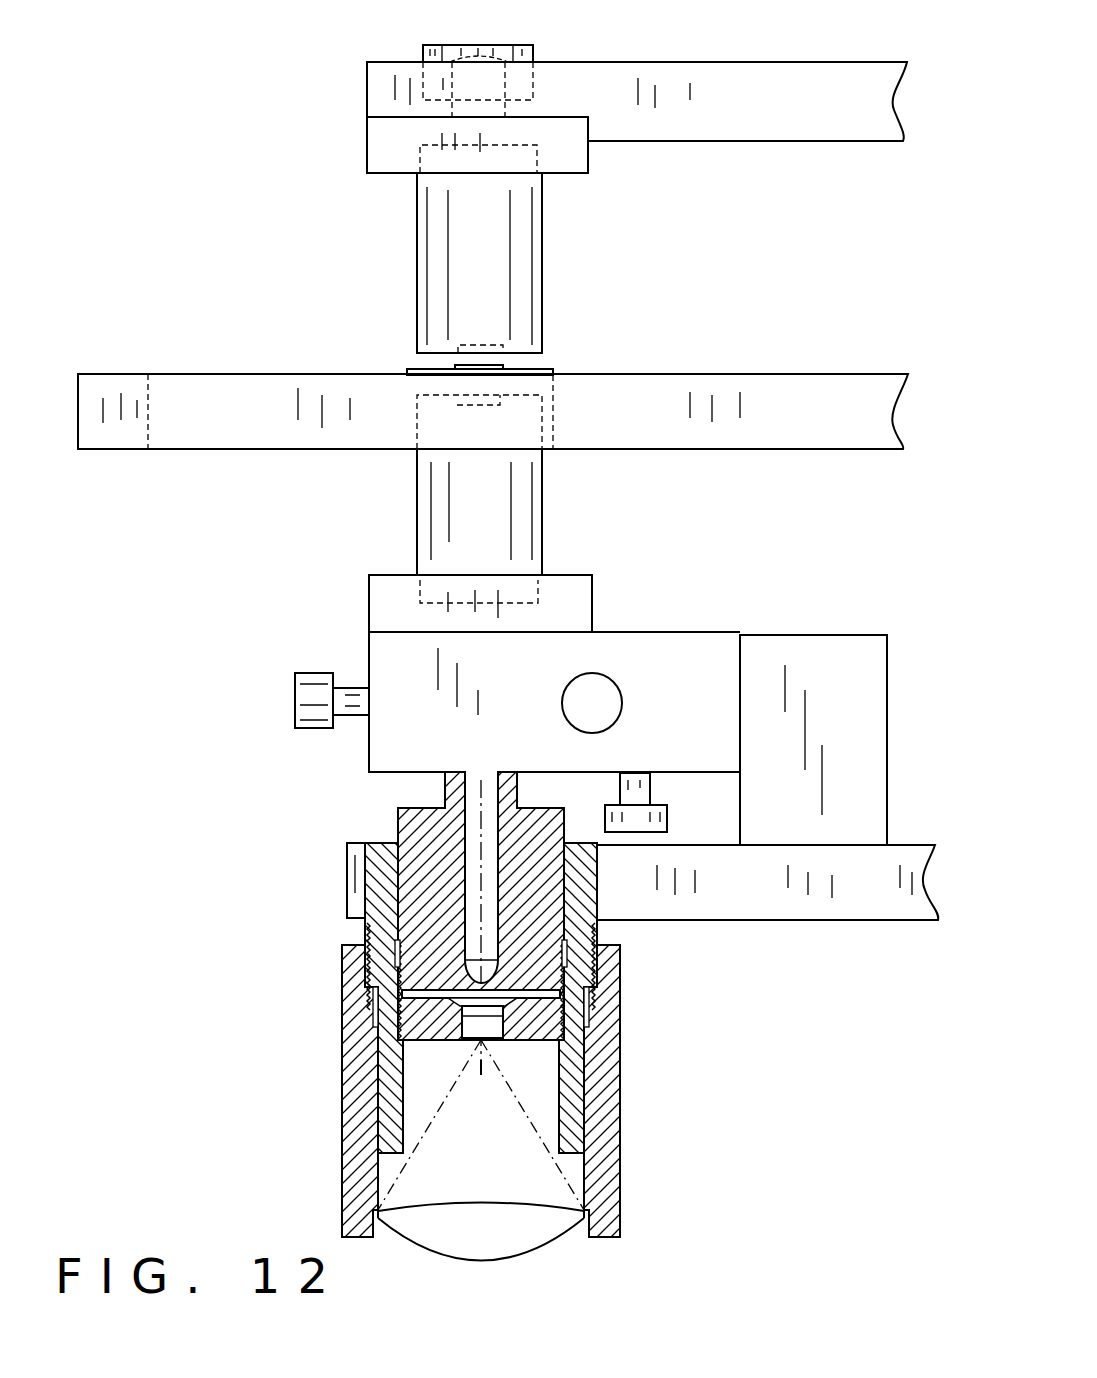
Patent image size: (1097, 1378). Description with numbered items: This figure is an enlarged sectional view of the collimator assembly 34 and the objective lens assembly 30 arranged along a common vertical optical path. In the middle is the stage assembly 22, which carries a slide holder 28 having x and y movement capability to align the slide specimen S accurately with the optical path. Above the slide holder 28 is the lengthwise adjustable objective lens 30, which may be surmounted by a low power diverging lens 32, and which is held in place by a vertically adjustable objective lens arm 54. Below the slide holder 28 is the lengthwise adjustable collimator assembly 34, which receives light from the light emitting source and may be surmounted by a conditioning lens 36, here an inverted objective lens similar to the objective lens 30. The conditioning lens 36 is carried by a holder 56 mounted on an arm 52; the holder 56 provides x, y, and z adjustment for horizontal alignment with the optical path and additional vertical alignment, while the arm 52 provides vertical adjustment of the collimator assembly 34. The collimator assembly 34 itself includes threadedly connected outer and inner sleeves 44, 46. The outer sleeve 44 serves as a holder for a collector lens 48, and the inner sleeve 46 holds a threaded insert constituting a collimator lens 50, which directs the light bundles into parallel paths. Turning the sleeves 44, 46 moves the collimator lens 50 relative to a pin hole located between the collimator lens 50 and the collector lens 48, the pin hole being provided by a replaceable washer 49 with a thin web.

The stage assembly 22 is at (764, 455).
The slide holder 28 is at (553, 370).
The objective lens 30 is at (543, 243).
The low power diverging lens 32 is at (500, 44).
The collimator assembly 34 is at (495, 1028).
The conditioning lens 36 is at (544, 487).
The outer sleeve 44 is at (342, 1018).
The inner sleeve 46 is at (368, 932).
The collector lens 48 is at (565, 1243).
The replaceable washer 49 is at (445, 1022).
The collimator lens 50 is at (478, 958).
The arm 52 is at (915, 921).
The objective lens arm 54 is at (793, 141).
The holder 56 is at (887, 705).
The slide specimen S is at (455, 367).